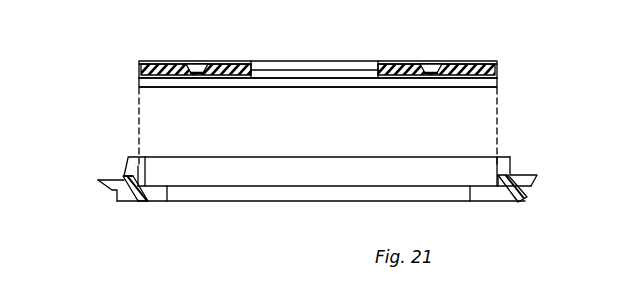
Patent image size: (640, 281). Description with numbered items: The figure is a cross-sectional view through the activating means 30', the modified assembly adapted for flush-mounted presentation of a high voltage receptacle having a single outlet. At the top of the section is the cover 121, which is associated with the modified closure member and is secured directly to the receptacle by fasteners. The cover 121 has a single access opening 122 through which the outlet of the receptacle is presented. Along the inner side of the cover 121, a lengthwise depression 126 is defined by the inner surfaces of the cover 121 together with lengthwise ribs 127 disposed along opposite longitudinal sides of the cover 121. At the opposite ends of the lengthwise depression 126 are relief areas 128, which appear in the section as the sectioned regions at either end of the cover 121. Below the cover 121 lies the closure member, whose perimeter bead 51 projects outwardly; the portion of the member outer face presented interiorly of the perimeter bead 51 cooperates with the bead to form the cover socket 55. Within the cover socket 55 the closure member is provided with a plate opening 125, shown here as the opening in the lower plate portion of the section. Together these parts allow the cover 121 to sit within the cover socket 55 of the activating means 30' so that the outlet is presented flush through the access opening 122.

The cover 121 is at (473, 57).
The access opening 122 is at (373, 70).
The plate opening 125 is at (281, 197).
The lengthwise depression 126 is at (229, 77).
The lengthwise ribs 127 is at (327, 87).
The relief areas 128 is at (163, 79).
The perimeter bead 51 is at (128, 160).
The cover socket 55 is at (485, 166).
The activating means 30' is at (291, 180).